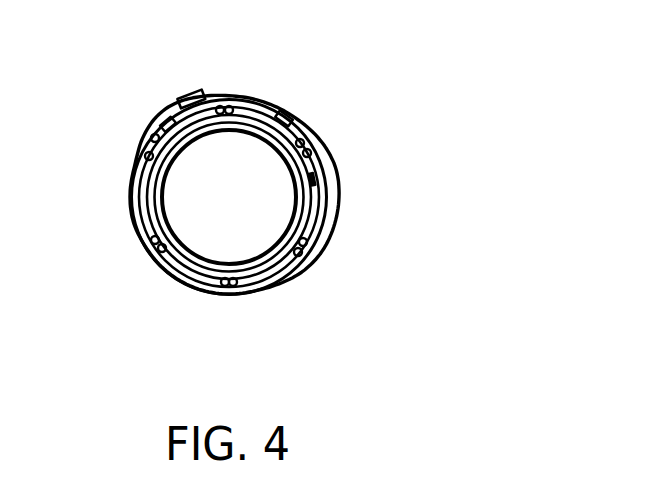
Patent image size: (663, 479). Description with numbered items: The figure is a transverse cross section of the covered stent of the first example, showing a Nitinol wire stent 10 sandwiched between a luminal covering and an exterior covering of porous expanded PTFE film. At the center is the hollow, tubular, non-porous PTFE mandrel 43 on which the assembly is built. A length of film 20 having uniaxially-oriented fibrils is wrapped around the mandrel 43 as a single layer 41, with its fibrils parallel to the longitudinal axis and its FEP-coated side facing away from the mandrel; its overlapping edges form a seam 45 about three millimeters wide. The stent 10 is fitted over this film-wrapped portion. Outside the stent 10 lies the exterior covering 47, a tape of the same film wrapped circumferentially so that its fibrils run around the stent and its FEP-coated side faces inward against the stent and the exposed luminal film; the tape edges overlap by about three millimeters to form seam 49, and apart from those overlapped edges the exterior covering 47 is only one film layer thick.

The Nitinol wire stent 10 is at (241, 97).
The film 20 is at (198, 284).
The single layer 41 is at (300, 122).
The mandrel 43 is at (275, 111).
The seam 45 is at (322, 216).
The exterior covering 47 is at (272, 284).
The seam 49 is at (180, 100).